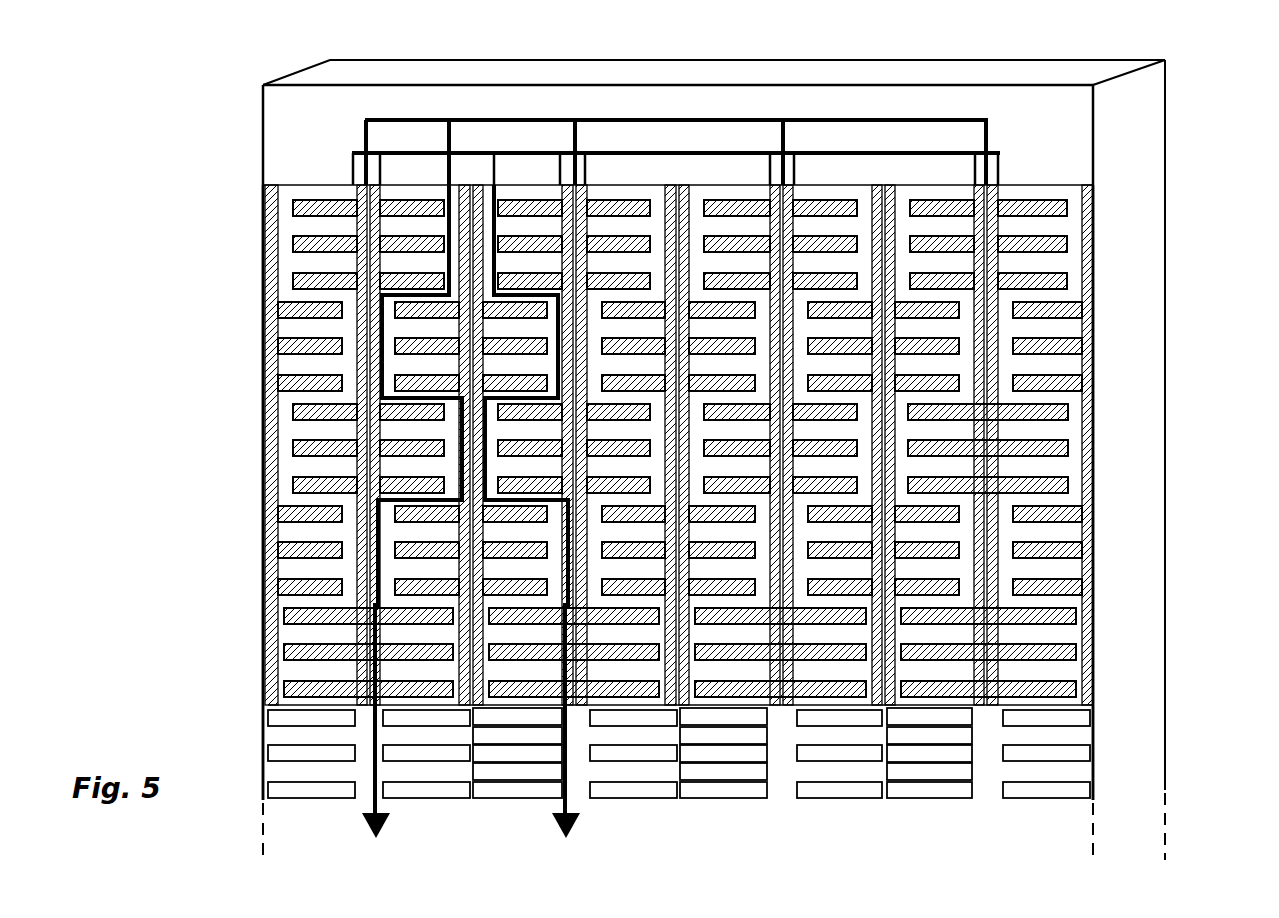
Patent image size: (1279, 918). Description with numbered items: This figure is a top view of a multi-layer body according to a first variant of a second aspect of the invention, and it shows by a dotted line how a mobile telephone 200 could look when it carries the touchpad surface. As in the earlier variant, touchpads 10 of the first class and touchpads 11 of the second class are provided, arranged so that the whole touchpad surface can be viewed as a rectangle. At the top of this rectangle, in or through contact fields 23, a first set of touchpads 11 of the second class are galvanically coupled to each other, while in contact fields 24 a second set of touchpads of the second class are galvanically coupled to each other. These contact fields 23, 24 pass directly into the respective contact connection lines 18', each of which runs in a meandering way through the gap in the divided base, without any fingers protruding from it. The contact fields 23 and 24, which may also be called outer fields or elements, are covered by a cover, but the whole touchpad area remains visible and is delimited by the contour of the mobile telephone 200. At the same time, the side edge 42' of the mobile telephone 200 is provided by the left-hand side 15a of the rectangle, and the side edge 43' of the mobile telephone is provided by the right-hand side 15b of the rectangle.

The mobile telephone 200 is at (877, 105).
The contact fields 23 is at (365, 133).
The contact fields 24 is at (495, 167).
The contact connection line 18' is at (508, 429).
The touchpads of the first class 10 is at (290, 226).
The touchpads of the second class 11 is at (265, 258).
The left-hand side of the rectangle 15a is at (266, 383).
The right-hand side of the rectangle 15b is at (1097, 388).
The side edge 42' is at (214, 492).
The side edge 43' is at (1177, 492).